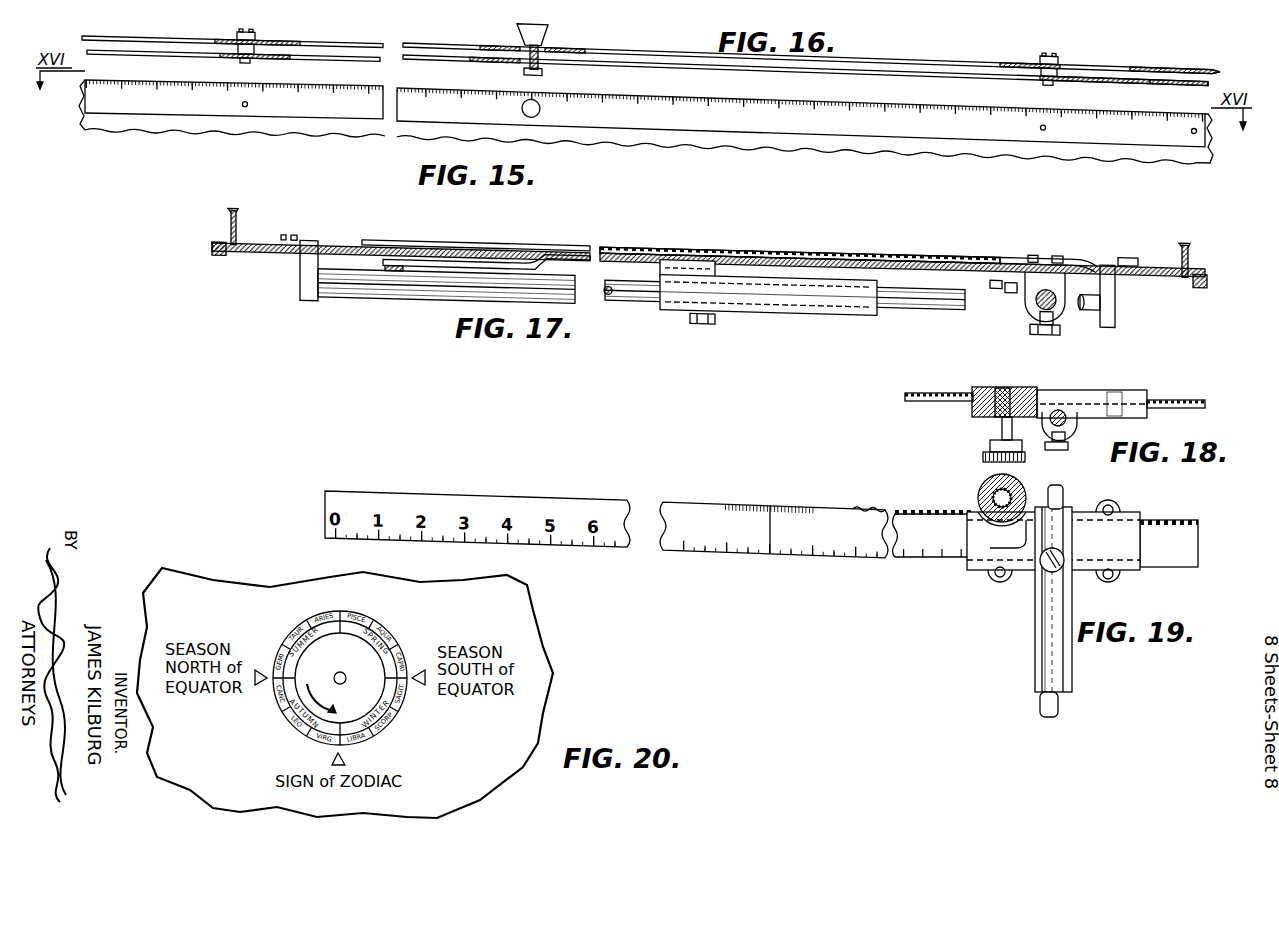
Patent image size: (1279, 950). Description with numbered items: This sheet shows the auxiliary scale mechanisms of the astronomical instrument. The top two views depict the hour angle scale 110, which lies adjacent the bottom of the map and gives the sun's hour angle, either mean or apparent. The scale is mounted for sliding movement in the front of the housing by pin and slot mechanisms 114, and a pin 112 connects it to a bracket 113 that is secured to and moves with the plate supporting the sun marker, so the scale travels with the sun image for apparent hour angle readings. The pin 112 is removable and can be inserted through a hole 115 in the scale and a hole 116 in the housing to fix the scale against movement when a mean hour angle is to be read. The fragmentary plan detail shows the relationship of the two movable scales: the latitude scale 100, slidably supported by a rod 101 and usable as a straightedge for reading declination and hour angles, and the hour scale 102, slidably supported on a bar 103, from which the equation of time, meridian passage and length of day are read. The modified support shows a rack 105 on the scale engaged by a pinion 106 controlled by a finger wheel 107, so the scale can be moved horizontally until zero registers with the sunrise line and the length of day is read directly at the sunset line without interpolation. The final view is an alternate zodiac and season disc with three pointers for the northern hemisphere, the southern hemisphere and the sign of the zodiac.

In FIG. 17, the latitude scale 100 is at (683, 250).
In FIG. 17, the rod 101 is at (948, 280).
In FIG. 17, the hour scale 102 is at (786, 247).
In FIG. 19, the hour scale 102 is at (712, 503).
In FIG. 17, the bar 103 is at (1050, 281).
In FIG. 19, the bar 103 is at (1068, 498).
In FIG. 19, the rack 105 is at (904, 511).
In FIG. 18, the pinion 106 is at (1010, 396).
In FIG. 19, the pinion 106 is at (990, 500).
In FIG. 19, the finger wheel 107 is at (1047, 489).
In FIG. 15, the hour angle scale 110 is at (755, 72).
In FIG. 16, the pin 112 is at (542, 74).
In FIG. 16, the bracket 113 is at (548, 30).
In FIG. 16, the pin and slot mechanisms 114 is at (253, 34).
In FIG. 16, the hole in scale 115 is at (1200, 86).
In FIG. 16, the hole in housing 116 is at (1207, 71).